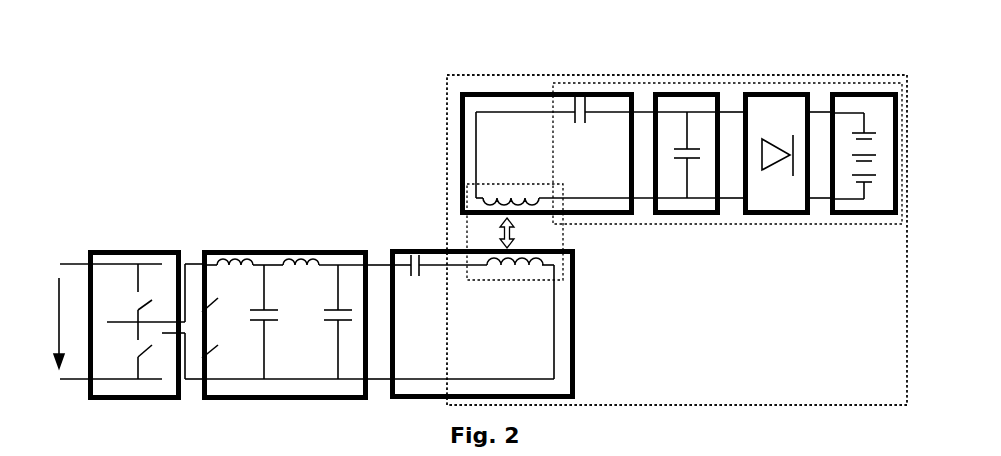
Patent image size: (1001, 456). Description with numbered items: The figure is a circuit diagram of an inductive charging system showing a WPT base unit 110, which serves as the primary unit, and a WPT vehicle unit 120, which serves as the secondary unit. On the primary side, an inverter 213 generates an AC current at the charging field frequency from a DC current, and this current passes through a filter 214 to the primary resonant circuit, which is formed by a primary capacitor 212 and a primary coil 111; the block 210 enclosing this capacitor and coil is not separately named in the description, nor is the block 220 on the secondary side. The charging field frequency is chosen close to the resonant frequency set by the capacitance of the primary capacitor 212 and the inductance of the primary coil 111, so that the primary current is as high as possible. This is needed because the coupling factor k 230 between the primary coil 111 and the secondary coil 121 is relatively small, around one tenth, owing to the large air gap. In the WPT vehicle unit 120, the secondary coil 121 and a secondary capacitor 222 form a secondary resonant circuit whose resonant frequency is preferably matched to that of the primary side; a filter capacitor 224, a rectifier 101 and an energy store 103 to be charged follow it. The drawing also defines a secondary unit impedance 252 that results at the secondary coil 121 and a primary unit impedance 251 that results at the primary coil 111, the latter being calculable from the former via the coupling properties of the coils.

The rectifier 101 is at (767, 218).
The energy store 103 is at (848, 218).
The WPT base unit 110 is at (263, 232).
The primary coil 111 is at (552, 270).
The WPT vehicle unit 120 is at (708, 258).
The secondary coil 121 is at (460, 198).
The power transmitting unit 210 is at (576, 346).
The primary capacitor 212 is at (415, 280).
The inverter 213 is at (132, 250).
The filter 214 is at (325, 250).
The resonance circuit 220 is at (460, 130).
The secondary capacitor 222 is at (575, 127).
The filter capacitor 224 is at (664, 218).
The coupling factor k 230 is at (488, 232).
The primary unit impedance Z_GA 251 is at (445, 99).
The secondary unit impedance Z_VA 252 is at (773, 81).